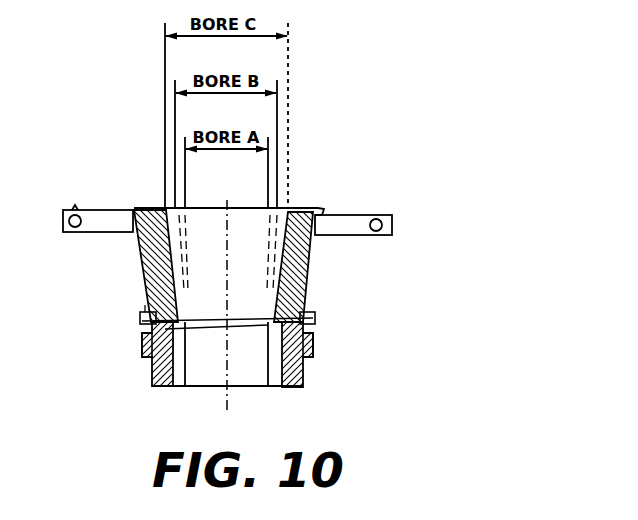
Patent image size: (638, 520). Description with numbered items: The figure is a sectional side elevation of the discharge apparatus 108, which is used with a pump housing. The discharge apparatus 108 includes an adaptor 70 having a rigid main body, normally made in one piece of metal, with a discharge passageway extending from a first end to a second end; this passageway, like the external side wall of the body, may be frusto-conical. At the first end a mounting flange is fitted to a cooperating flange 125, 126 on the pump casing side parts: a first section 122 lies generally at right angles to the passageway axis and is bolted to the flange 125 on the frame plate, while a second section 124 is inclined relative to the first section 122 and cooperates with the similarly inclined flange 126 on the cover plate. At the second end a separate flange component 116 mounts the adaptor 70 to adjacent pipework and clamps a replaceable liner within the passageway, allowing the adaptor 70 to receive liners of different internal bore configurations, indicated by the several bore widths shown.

The discharge apparatus 108 is at (489, 139).
The flange component 116 is at (340, 225).
The adaptor 70 is at (305, 267).
The first section 122 is at (143, 315).
The second section 124 is at (300, 305).
The cooperating flange 125 is at (143, 340).
The inclined flange 126 is at (305, 337).